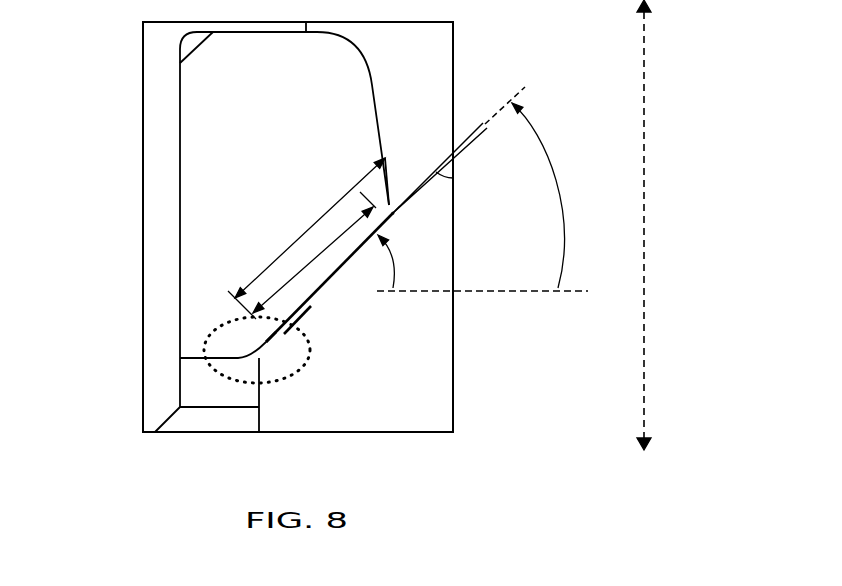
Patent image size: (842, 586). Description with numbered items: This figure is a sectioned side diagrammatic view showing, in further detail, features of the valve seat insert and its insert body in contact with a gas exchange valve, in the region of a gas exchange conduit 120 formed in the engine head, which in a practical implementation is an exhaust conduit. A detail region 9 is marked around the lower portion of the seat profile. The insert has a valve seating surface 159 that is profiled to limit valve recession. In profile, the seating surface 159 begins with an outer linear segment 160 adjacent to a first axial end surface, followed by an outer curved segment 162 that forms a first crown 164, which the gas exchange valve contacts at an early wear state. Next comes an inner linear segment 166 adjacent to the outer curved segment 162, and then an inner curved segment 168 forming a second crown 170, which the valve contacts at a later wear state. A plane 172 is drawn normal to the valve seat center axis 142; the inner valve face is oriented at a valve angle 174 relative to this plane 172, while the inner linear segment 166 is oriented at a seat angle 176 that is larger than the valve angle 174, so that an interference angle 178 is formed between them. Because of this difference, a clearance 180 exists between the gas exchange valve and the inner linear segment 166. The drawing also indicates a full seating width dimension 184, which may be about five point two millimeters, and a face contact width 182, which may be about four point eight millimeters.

The detail region 9 is at (212, 333).
The second gas exchange conduit 120 is at (432, 422).
The valve seat center axis 142 is at (644, 240).
The valve seating surface 159 is at (311, 306).
The outer linear segment 160 is at (268, 340).
The outer curved segment 162 is at (268, 352).
The first crown 164 is at (276, 346).
The inner linear segment 166 is at (345, 263).
The inner curved segment 168 is at (394, 211).
The second crown 170 is at (398, 221).
The plane 172 is at (517, 293).
The valve angle 174 is at (560, 183).
The seat angle 176 is at (394, 267).
The interference angle 178 is at (500, 155).
The clearance 180 is at (390, 212).
The face contact width 182 is at (314, 252).
The full seating width dimension 184 is at (306, 238).